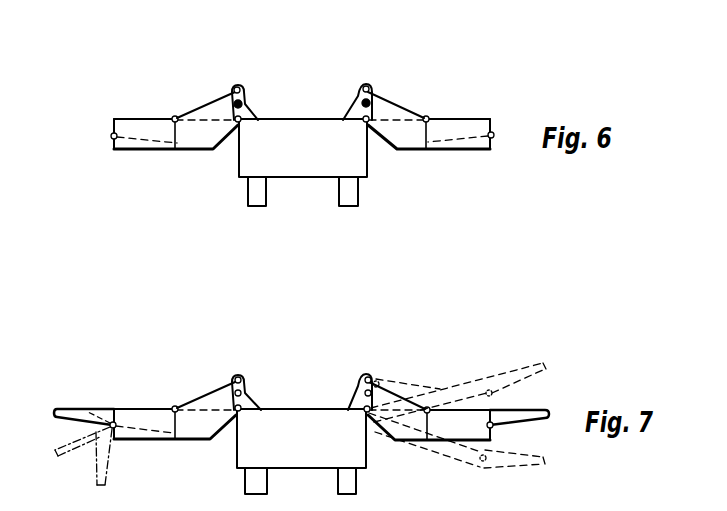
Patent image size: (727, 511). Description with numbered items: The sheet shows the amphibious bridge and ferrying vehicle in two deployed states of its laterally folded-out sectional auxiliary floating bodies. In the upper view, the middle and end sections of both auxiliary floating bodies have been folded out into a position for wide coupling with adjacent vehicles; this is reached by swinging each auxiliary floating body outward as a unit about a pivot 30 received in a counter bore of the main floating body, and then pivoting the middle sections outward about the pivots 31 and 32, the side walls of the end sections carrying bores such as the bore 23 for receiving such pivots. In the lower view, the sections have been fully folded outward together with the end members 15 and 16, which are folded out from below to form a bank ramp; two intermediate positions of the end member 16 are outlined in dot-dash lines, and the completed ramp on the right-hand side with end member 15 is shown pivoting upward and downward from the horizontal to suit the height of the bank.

In FIG. 7, the floating body section 15 is at (526, 409).
In FIG. 7, the floating body section 16 is at (68, 407).
In FIG. 6, the bore 23 is at (371, 100).
In FIG. 6, the pivot 30 is at (235, 102).
In FIG. 6, the pivot 31 is at (428, 117).
In FIG. 6, the pivot 32 is at (175, 116).